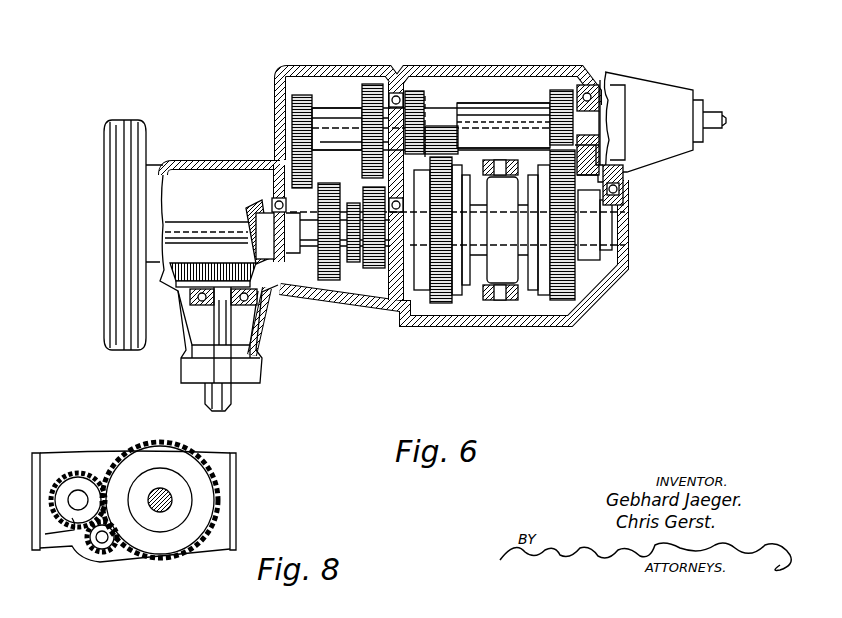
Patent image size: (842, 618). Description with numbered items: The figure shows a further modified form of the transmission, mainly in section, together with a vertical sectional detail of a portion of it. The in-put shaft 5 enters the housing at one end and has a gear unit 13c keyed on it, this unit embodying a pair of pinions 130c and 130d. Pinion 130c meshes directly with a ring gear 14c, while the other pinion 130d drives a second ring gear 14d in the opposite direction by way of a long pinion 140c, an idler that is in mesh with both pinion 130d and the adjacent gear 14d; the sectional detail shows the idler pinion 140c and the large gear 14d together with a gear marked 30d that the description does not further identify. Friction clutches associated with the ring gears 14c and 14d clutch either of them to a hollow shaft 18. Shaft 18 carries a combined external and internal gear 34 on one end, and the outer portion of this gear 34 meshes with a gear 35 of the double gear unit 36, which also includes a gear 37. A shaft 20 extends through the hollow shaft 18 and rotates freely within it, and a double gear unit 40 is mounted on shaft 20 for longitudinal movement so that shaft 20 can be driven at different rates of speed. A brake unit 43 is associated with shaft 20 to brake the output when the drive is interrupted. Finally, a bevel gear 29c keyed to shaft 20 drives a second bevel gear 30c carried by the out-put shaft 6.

In FIG. 6, the in-put shaft 5 is at (716, 112).
In FIG. 8, the in-put shaft 5 is at (80, 494).
In FIG. 6, the out-put shaft 6 is at (232, 398).
In FIG. 6, the gear unit 13c is at (490, 105).
In FIG. 6, the ring gear 14c is at (625, 200).
In FIG. 6, the ring gear 14d is at (446, 304).
In FIG. 8, the ring gear 14d is at (182, 540).
In FIG. 6, the shaft 18 is at (527, 300).
In FIG. 8, the shaft 18 is at (162, 490).
In FIG. 6, the shaft 20 is at (183, 230).
In FIG. 6, the bevel gear 29c is at (250, 206).
In FIG. 6, the second bevel gear 30c is at (175, 272).
In FIG. 8, the pinion 30d is at (72, 516).
In FIG. 6, the combined external and internal gear 34 is at (375, 270).
In FIG. 6, the gear 35 is at (373, 84).
In FIG. 6, the double gear unit 36 is at (330, 120).
In FIG. 6, the gear 37 is at (296, 92).
In FIG. 6, the double gear unit 40 is at (345, 282).
In FIG. 6, the brake unit 43 is at (104, 170).
In FIG. 6, the pinion 130c is at (562, 90).
In FIG. 6, the pinion 130d is at (413, 92).
In FIG. 6, the long pinion 140c is at (437, 96).
In FIG. 8, the long pinion 140c is at (101, 542).